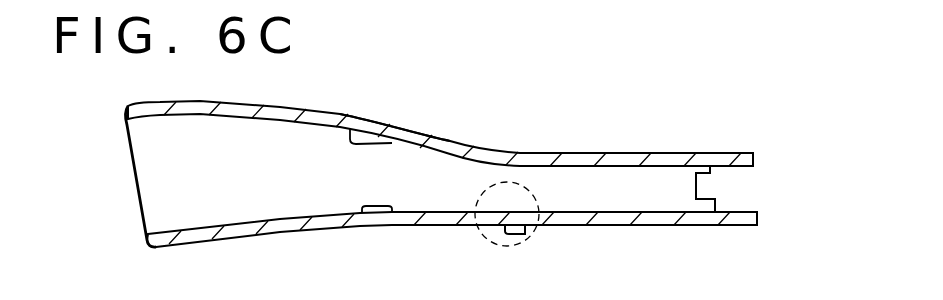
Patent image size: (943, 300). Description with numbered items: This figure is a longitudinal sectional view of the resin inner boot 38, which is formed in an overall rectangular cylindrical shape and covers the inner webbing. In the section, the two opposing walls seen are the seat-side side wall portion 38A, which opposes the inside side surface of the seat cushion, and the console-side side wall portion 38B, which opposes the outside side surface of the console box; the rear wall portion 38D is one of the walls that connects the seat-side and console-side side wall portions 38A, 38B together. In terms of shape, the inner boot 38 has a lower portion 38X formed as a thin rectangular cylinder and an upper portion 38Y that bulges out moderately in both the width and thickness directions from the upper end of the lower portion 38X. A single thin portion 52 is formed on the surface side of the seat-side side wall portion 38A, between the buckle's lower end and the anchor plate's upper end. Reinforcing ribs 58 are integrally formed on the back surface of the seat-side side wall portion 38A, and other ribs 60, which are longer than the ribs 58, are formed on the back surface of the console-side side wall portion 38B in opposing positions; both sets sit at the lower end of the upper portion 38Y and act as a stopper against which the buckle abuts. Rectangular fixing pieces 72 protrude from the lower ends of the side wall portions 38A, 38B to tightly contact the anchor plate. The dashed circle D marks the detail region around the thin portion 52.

The inner boot 38 is at (521, 114).
The seat-side side wall portion 38A is at (236, 240).
The console-side side wall portion 38B is at (290, 107).
The rear wall portion 38D is at (600, 187).
The lower portion 38X is at (678, 153).
The upper portion 38Y is at (355, 113).
The thin portion 52 is at (527, 232).
The ribs 58 is at (365, 207).
The ribs 60 is at (350, 138).
The fixing piece 72 is at (740, 153).
The region D is at (473, 229).